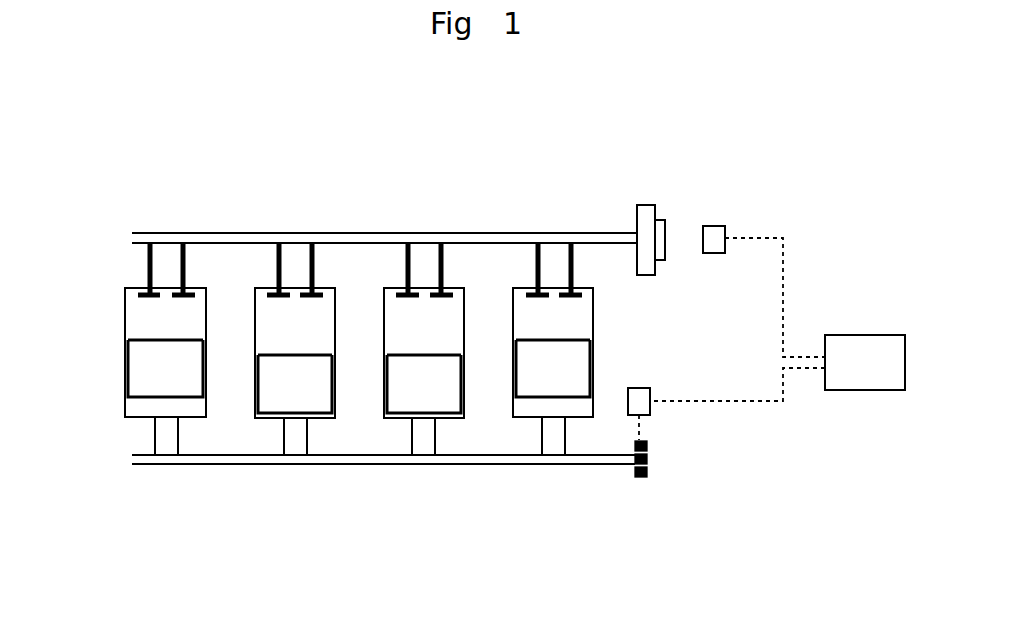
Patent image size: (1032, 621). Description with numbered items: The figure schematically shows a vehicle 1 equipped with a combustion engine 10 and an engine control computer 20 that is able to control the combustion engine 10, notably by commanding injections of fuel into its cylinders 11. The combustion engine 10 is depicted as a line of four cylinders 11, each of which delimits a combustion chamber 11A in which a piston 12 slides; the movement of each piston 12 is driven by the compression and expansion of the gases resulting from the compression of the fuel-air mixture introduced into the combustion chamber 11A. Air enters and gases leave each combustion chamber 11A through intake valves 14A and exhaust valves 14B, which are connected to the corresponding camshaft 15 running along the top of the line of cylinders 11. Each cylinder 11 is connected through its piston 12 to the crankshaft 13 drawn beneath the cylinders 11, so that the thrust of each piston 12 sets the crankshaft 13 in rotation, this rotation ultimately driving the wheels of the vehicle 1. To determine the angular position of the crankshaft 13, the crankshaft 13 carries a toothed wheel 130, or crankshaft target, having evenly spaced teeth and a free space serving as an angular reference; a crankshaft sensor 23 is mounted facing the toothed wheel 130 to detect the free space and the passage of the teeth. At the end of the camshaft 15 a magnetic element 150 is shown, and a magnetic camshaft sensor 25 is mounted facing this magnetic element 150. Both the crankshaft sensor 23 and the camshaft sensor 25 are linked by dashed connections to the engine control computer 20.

The vehicle 1 is at (318, 151).
The combustion engine 10 is at (160, 223).
The cylinder 11 is at (125, 400).
The combustion chamber 11A is at (155, 323).
The piston 12 is at (570, 360).
The crankshaft 13 is at (355, 458).
The intake valve 14A is at (150, 267).
The exhaust valve 14B is at (183, 266).
The camshaft 15 is at (498, 233).
The magnetic element 150 is at (660, 222).
The engine control computer 20 is at (863, 335).
The crankshaft sensor 23 is at (641, 405).
The camshaft sensor 25 is at (715, 235).
The toothed wheel 130 is at (640, 480).